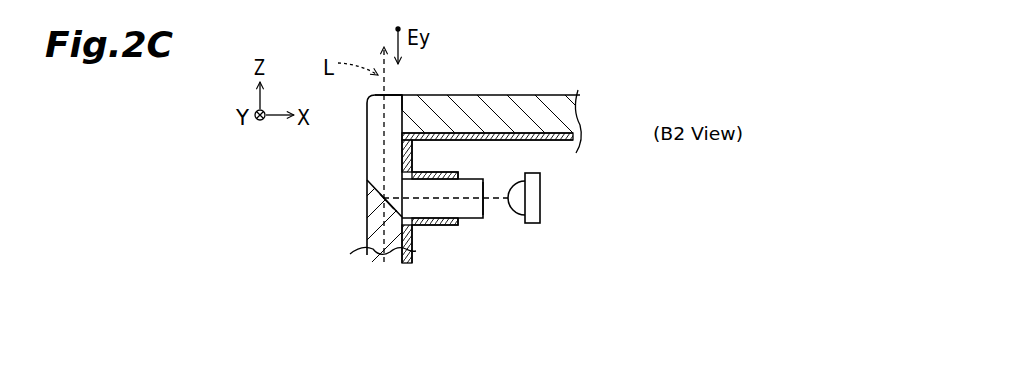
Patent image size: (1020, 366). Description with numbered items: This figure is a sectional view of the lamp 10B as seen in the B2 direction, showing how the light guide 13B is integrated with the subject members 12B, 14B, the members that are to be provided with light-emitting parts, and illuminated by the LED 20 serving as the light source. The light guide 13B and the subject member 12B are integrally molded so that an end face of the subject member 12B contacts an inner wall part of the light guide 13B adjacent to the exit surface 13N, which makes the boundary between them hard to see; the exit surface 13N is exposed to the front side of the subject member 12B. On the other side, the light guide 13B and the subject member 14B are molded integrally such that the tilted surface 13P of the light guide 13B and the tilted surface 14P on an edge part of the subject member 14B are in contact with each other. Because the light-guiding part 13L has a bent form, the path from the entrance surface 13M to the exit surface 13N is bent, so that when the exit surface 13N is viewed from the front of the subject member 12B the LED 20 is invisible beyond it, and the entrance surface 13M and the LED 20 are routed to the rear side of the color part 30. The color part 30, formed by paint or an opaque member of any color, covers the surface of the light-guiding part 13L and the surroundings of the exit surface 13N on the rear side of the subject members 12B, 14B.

The lamp 10B is at (524, 69).
The subject member 12B is at (562, 107).
The light-guiding part 13L is at (377, 142).
The exit surface 13N is at (399, 92).
The light guide 13B is at (471, 223).
The entrance surface 13M is at (485, 208).
The tilted surface 13P is at (394, 212).
The tilted surface 14P is at (373, 189).
The subject member 14B is at (377, 220).
The color part 30 is at (534, 142).
The LED 20 is at (543, 210).